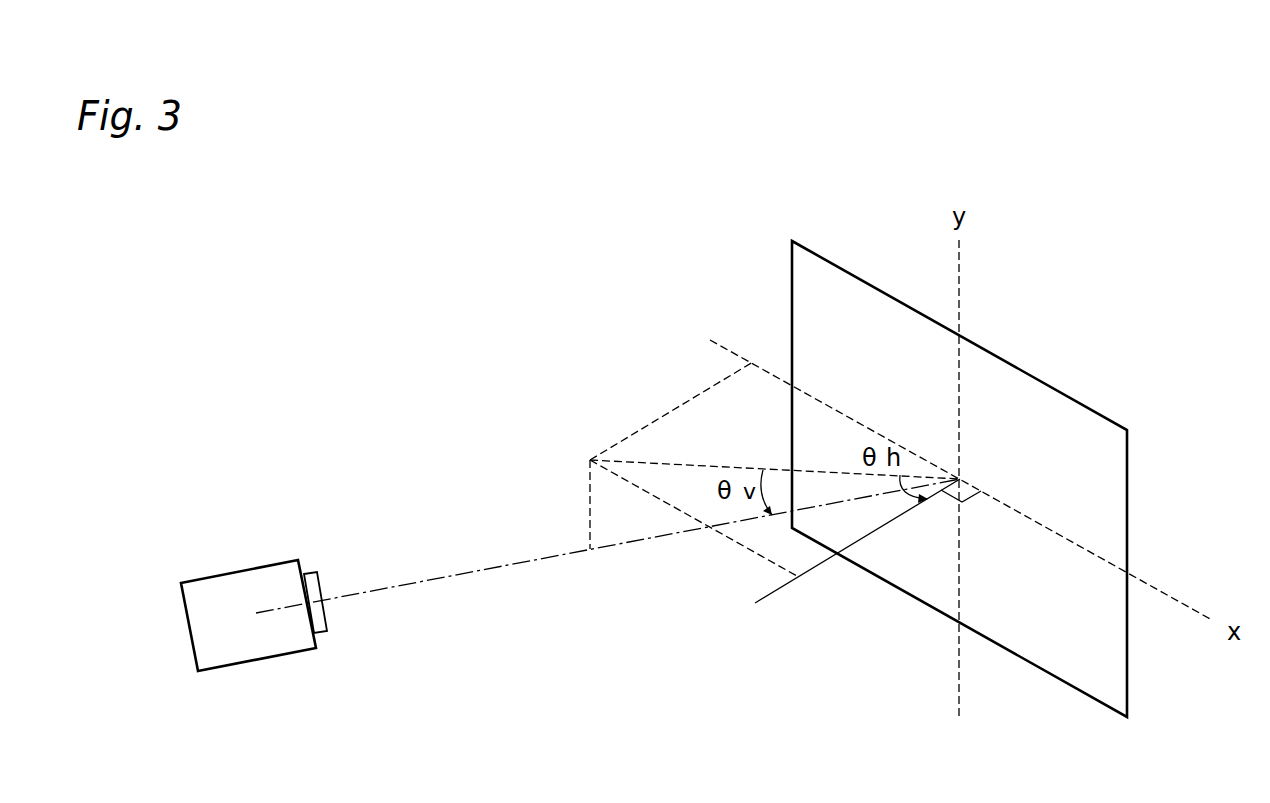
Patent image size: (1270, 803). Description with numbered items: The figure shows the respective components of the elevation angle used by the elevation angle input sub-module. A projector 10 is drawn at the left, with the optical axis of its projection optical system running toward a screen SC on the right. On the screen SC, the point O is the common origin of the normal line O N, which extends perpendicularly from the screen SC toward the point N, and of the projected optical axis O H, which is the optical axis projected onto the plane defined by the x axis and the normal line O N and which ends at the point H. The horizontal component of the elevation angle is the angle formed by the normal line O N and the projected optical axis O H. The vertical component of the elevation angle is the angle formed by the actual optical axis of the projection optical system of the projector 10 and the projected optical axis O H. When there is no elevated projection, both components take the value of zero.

The projector 10 is at (242, 571).
The screen SC is at (1127, 523).
The point H of projected optical axis OH H is at (748, 469).
The normal line ON of the screen N is at (843, 553).
The origin point of normal line ON and projected optical axis OH O is at (963, 478).